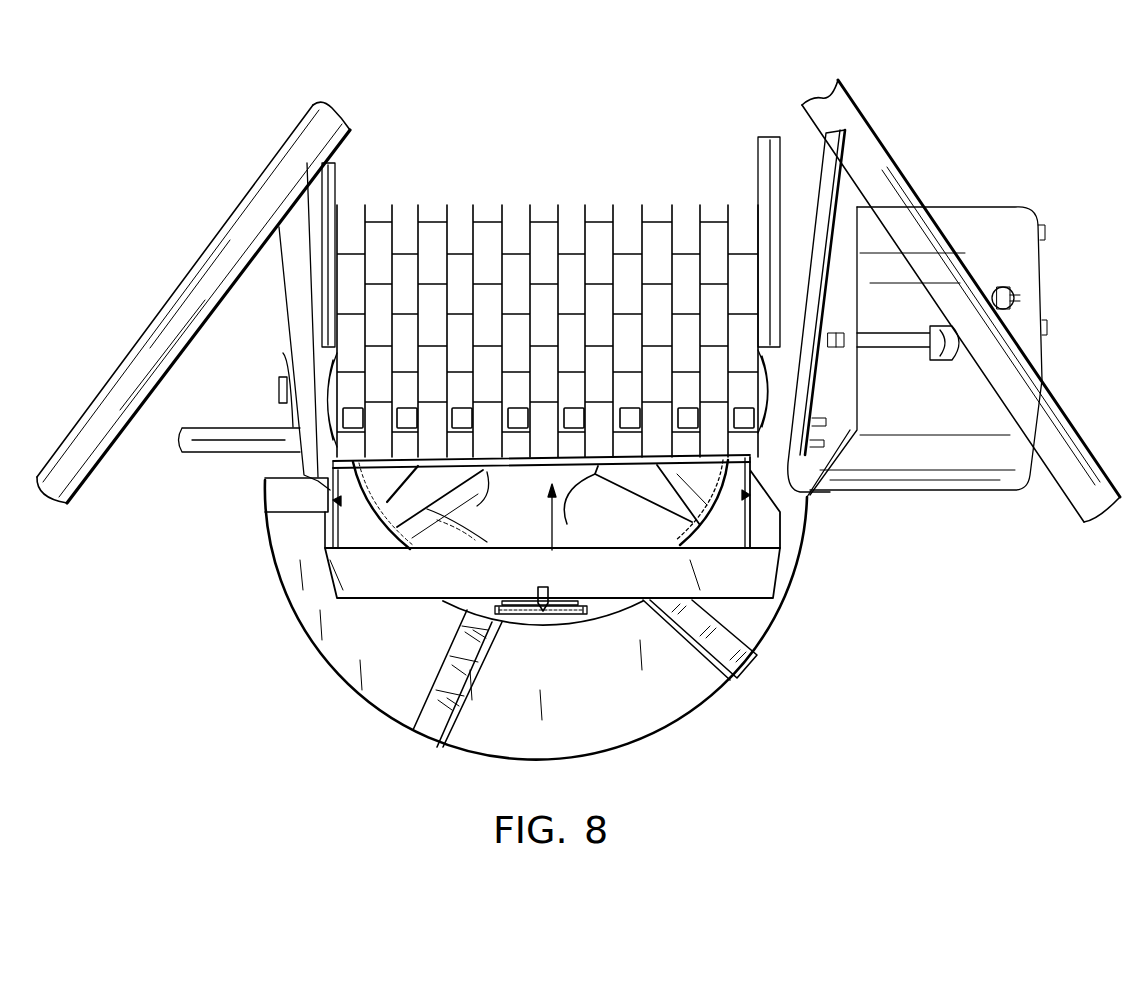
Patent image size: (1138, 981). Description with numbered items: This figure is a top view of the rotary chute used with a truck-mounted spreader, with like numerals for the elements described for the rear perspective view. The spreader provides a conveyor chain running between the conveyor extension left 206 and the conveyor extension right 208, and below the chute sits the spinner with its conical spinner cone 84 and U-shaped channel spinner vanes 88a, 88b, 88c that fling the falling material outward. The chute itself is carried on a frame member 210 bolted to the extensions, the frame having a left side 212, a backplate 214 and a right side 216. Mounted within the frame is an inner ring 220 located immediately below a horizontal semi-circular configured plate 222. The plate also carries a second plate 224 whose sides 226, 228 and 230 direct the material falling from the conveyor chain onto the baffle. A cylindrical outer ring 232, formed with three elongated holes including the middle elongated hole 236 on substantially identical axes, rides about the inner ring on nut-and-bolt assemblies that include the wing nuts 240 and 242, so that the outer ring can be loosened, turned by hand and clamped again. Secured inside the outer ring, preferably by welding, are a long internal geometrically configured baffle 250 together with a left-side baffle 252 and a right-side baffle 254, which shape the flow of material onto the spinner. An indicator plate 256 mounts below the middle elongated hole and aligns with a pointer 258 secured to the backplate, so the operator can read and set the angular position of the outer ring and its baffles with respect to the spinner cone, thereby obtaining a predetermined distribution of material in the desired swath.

The conveyor extension left 206 is at (322, 315).
The conveyor extension right 208 is at (800, 316).
The U-shaped channel spinner vane 88a is at (282, 464).
The U-shaped channel spinner vane 88b is at (433, 730).
The U-shaped channel spinner vane 88c is at (735, 660).
The left side 212 is at (322, 515).
The wing nut 240 is at (320, 538).
The side 226 is at (403, 486).
The horizontal semi-circular configured plate 222 is at (383, 544).
The geometrically configured baffle 250 is at (491, 477).
The side 228 is at (474, 516).
The left-side baffle 252 is at (430, 548).
The conical spinner cone 84 is at (456, 527).
The second plate 224 is at (563, 532).
The pointer 258 is at (538, 592).
The side 230 is at (678, 475).
The right-side baffle 254 is at (585, 504).
The backplate 214 is at (668, 507).
The inner ring 220 is at (690, 516).
The right side 216 is at (785, 534).
The frame member 210 is at (748, 577).
The elongated hole 236 is at (470, 603).
The wing nut 242 is at (532, 614).
The indicator plate 256 is at (560, 616).
The cylindrical outer ring 232 is at (606, 620).